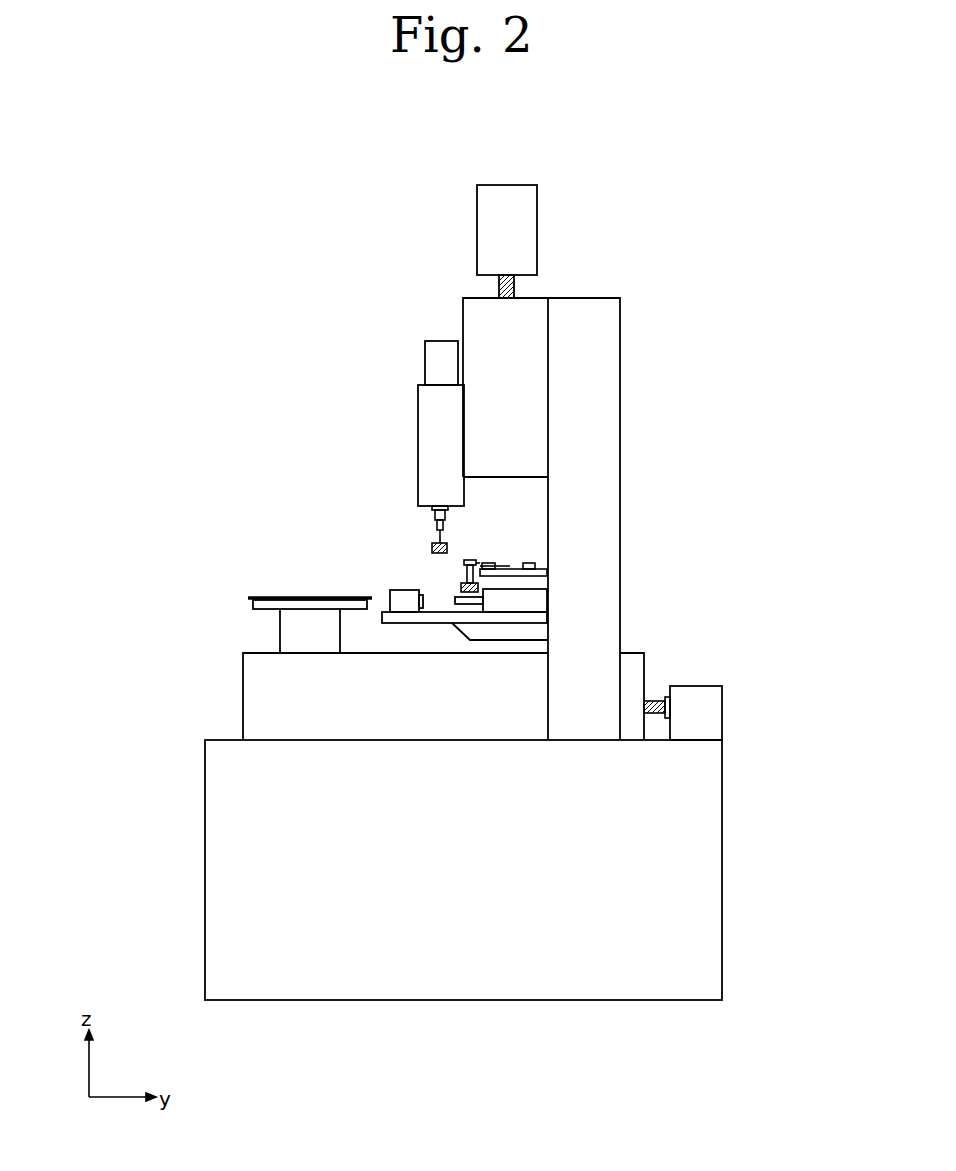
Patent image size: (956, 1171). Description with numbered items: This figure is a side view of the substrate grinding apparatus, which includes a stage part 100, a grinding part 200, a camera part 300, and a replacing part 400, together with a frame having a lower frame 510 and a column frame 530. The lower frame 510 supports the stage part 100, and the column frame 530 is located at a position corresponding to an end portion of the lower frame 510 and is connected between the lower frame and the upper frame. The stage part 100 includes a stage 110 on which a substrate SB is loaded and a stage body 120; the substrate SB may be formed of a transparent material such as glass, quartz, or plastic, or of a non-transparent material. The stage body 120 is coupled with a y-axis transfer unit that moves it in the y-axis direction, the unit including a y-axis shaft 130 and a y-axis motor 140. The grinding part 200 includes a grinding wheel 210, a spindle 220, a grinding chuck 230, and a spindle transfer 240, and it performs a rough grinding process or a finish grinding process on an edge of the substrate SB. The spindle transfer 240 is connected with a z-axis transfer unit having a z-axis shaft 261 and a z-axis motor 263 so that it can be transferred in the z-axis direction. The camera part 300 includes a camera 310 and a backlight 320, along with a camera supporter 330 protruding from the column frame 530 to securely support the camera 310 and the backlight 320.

The stage part 100 is at (374, 670).
The stage 110 is at (255, 605).
The stage body 120 is at (250, 688).
The y-axis shaft 130 is at (652, 698).
The y-axis motor 140 is at (715, 710).
The grinding part 200 is at (381, 452).
The grinding wheel 210 is at (397, 549).
The spindle 220 is at (430, 483).
The grinding chuck 230 is at (432, 516).
The spindle transfer 240 is at (470, 443).
The z-axis shaft 261 is at (497, 287).
The z-axis motor 263 is at (487, 222).
The camera part 300 is at (462, 714).
The camera 310 is at (510, 603).
The backlight 320 is at (403, 603).
The camera supporter 330 is at (447, 617).
The replacing part 400 is at (501, 548).
The lower frame 510 is at (215, 862).
The column frame 530 is at (610, 485).
The substrate SB is at (248, 598).